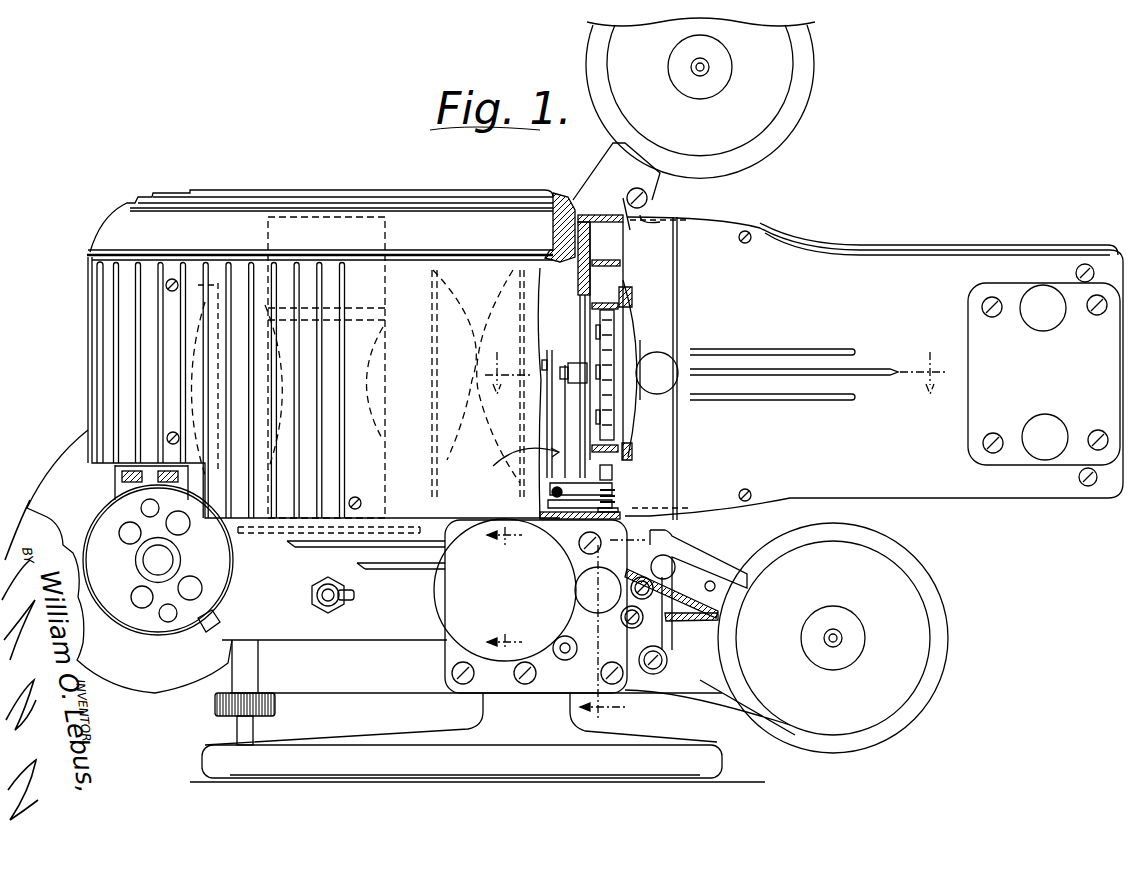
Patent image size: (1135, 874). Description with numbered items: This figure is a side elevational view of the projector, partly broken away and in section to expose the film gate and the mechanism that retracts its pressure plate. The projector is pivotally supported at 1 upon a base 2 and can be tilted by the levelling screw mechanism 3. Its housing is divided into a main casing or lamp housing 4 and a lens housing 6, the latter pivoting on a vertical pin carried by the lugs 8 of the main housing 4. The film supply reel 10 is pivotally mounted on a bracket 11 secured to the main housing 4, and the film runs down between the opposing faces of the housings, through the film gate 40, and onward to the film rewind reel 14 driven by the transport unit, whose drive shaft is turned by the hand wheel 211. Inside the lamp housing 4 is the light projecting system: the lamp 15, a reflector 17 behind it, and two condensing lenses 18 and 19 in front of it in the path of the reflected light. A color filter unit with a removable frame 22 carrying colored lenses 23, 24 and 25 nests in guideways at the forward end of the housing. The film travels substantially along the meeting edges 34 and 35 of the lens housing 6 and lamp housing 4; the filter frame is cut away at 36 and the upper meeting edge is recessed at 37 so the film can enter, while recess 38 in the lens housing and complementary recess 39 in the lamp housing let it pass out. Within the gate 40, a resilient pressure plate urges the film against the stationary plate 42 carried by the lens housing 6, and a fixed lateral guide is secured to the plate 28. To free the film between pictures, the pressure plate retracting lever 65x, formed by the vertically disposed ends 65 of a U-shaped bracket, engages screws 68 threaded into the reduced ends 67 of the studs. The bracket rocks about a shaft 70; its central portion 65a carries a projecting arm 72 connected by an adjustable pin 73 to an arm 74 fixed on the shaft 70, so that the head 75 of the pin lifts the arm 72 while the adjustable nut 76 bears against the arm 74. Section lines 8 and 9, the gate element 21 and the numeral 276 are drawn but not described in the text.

The pivotal support 1 is at (527, 680).
The base 2 is at (530, 790).
The levelling screw mechanism 3 is at (278, 708).
The main casing or lamp housing 4 is at (243, 190).
The lens housing 6 is at (946, 248).
The lugs 8 is at (621, 624).
The section line 9- 9 is at (513, 589).
The film supply reel 10 is at (813, 86).
The bracket 11 is at (612, 143).
The film rewind reel 14 is at (937, 621).
The lamp 15 is at (268, 231).
The reflector 17 is at (195, 327).
The condensing lens 18 is at (462, 305).
The condensing lens 19 is at (505, 305).
The gate member 21 is at (625, 280).
The removable frame 22 is at (618, 255).
The colored lens 23 is at (635, 312).
The colored lens 24 is at (612, 395).
The colored lens 25 is at (615, 430).
The plate 28 is at (578, 290).
The meeting edge of lens housing 34 is at (660, 218).
The forward face of lamp housing 35 is at (605, 216).
The cut-away portion of filter frame 36 is at (622, 196).
The recess 37 is at (648, 193).
The recess 38 is at (620, 510).
The complementary recess 39 is at (618, 496).
The film gate 40 is at (645, 325).
The stationary plate 42 is at (640, 285).
The vertically disposed ends of U-shaped bracket 65 is at (545, 403).
The central portion of U-shaped bracket 65a is at (555, 520).
The pressure plate retracting lever 65x is at (510, 463).
The reduced ends of studs 67 is at (568, 365).
The screws 68 is at (544, 360).
The shaft 70 is at (548, 503).
The projecting arm 72 is at (578, 516).
The adjustable pin 73 is at (642, 485).
The arm 74 is at (550, 486).
The head of pin 75 is at (668, 534).
The adjustable nut 76 is at (612, 478).
The hand wheel 211 is at (447, 612).
The aperture 276 is at (583, 592).